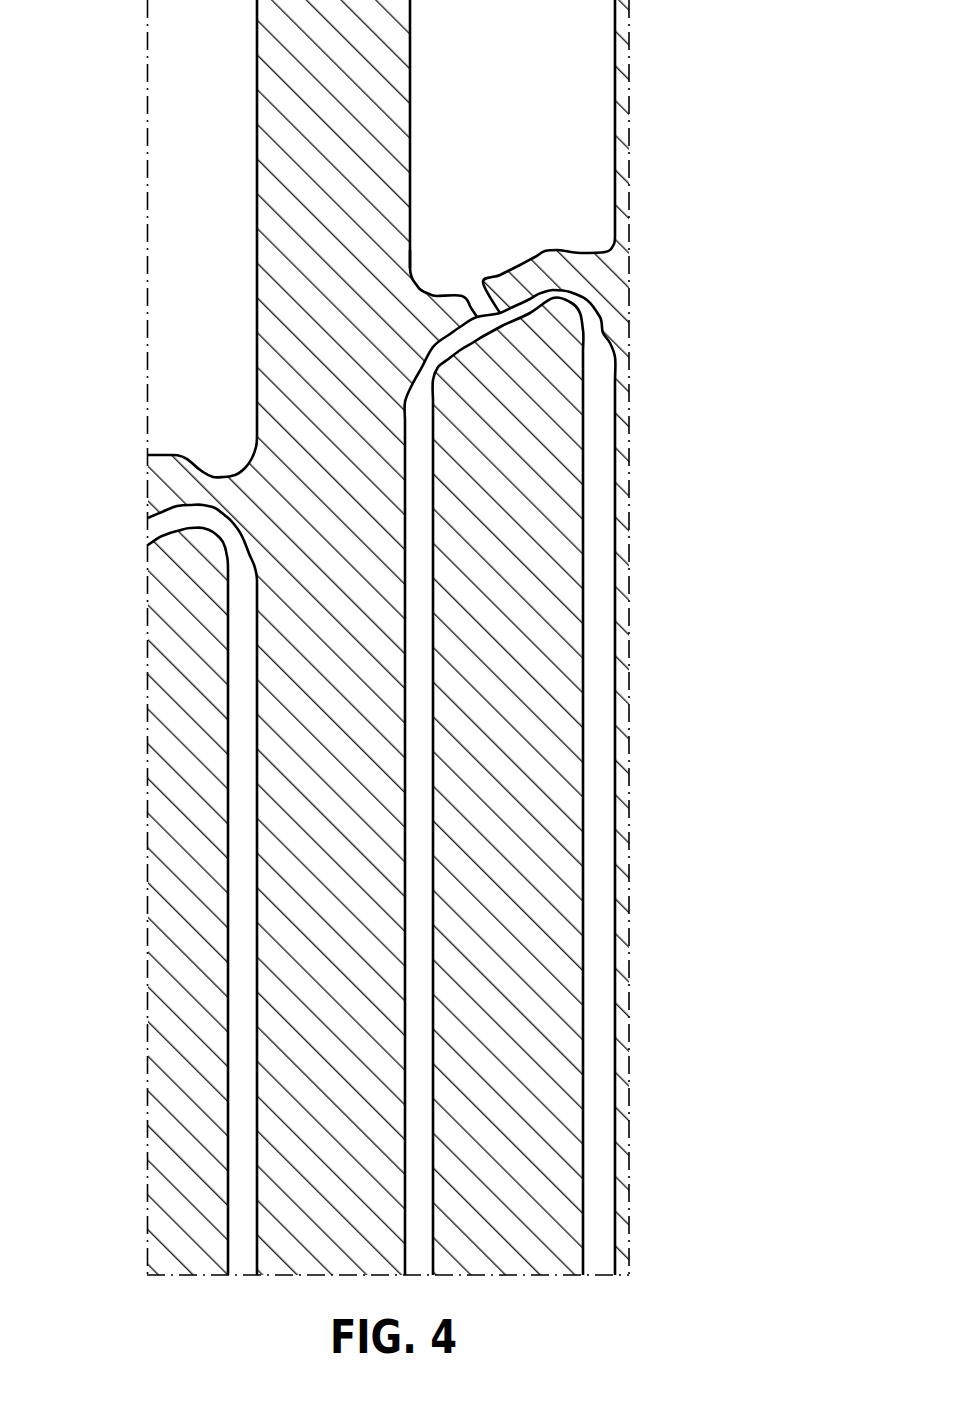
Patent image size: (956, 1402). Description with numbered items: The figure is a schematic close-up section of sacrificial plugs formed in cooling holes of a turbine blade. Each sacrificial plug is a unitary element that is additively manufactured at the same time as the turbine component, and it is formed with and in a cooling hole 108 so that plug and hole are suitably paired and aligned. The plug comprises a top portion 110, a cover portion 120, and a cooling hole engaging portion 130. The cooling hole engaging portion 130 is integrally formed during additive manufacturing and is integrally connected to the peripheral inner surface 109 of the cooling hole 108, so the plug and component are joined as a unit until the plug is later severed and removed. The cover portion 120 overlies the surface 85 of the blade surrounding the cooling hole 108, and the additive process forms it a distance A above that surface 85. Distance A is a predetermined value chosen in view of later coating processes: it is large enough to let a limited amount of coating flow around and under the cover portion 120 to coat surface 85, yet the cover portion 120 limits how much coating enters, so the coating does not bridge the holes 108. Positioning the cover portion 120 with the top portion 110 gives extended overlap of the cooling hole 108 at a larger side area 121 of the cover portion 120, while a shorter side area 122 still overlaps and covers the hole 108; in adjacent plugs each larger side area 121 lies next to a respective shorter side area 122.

The surface 85 is at (520, 420).
The cooling hole 108 is at (225, 528).
The peripheral inner surface 109 is at (430, 865).
The top portion 110 is at (330, 140).
The cover portion 120 is at (117, 412).
The larger side area 121 is at (212, 483).
The shorter side area 122 is at (432, 282).
The cooling hole engaging portion 130 is at (338, 797).
The distance A is at (193, 518).